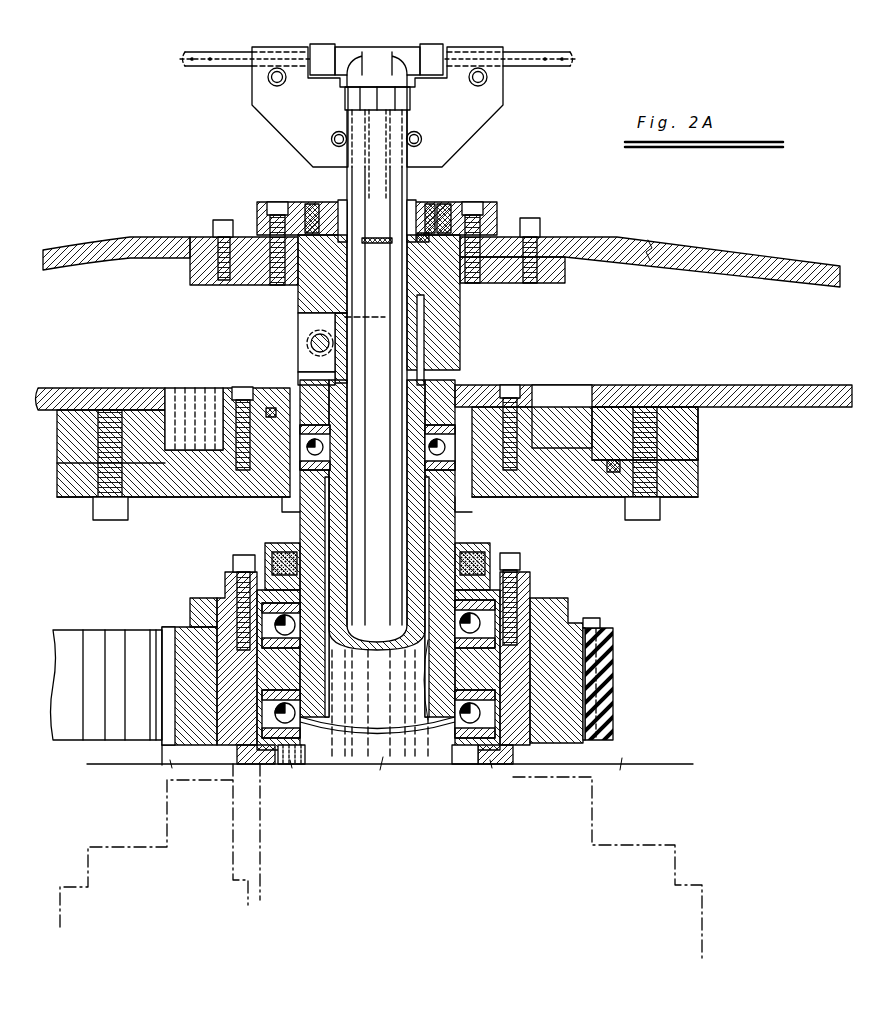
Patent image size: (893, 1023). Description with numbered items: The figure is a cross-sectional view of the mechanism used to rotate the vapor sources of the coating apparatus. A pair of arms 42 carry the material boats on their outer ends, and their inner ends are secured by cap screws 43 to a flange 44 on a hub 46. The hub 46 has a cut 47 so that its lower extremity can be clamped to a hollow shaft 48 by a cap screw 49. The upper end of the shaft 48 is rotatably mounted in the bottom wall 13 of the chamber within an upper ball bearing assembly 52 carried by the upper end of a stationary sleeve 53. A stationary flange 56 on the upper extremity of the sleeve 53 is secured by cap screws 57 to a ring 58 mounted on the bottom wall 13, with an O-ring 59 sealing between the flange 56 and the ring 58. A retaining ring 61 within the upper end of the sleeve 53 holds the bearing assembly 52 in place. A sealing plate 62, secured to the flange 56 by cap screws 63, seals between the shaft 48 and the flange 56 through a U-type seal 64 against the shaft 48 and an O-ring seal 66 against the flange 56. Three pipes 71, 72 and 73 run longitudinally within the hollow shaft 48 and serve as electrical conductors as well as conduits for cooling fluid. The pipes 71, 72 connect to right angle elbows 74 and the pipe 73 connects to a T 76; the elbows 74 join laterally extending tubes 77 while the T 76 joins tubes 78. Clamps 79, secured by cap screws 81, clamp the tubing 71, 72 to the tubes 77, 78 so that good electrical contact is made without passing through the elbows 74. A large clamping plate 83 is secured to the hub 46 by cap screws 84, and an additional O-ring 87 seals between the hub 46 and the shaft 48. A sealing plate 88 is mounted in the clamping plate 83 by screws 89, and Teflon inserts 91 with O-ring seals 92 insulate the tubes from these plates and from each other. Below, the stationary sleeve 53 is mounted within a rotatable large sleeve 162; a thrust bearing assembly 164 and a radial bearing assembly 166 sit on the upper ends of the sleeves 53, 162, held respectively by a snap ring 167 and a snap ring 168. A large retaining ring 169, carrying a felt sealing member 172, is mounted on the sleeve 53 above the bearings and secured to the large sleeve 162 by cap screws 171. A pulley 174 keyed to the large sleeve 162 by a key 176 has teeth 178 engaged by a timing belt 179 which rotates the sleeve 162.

The bottom wall 13 is at (735, 383).
The arms 42 is at (95, 272).
The cap screws 43 is at (222, 222).
The flange 44 is at (575, 272).
The hub 46 is at (470, 316).
The cut 47 is at (300, 322).
The hollow shaft 48 is at (298, 376).
The cap screw 49 is at (308, 346).
The upper ball bearing assembly 52 is at (480, 382).
The stationary sleeve 53 is at (458, 522).
The stationary flange 56 is at (688, 475).
The cap screws 57 is at (92, 518).
The ring 58 is at (690, 435).
The O-ring 59 is at (613, 474).
The retaining ring 61 is at (485, 383).
The sealing plate 62 is at (565, 383).
The cap screws 63 is at (240, 388).
The U-type seal 64 is at (468, 383).
The O-ring seal 66 is at (270, 406).
The pipe 71 is at (360, 490).
The pipe 72 is at (398, 500).
The pipe 73 is at (388, 181).
The right angle elbows 74 is at (358, 47).
The T 76 is at (380, 45).
The tubes 77 is at (232, 55).
The tubes 78 is at (200, 52).
The clamps 79 is at (312, 127).
The cap screws 81 is at (270, 79).
The clamping plate 83 is at (500, 215).
The cap screws 84 is at (280, 200).
The O-ring 87 is at (448, 203).
The sealing plate 88 is at (444, 200).
The screws 89 is at (318, 203).
The inserts 91 is at (342, 200).
The O-ring seals 92 is at (428, 202).
The large sleeve 162 is at (520, 650).
The thrust bearing assembly 164 is at (500, 620).
The radial bearing assembly 166 is at (240, 748).
The snap ring 167 is at (420, 765).
The snap ring 168 is at (503, 765).
The retaining ring 169 is at (222, 590).
The cap screws 171 is at (244, 553).
The felt sealing member 172 is at (285, 545).
The pulley 174 is at (583, 613).
The key 176 is at (200, 625).
The teeth 178 is at (592, 620).
The timing belt 179 is at (102, 625).